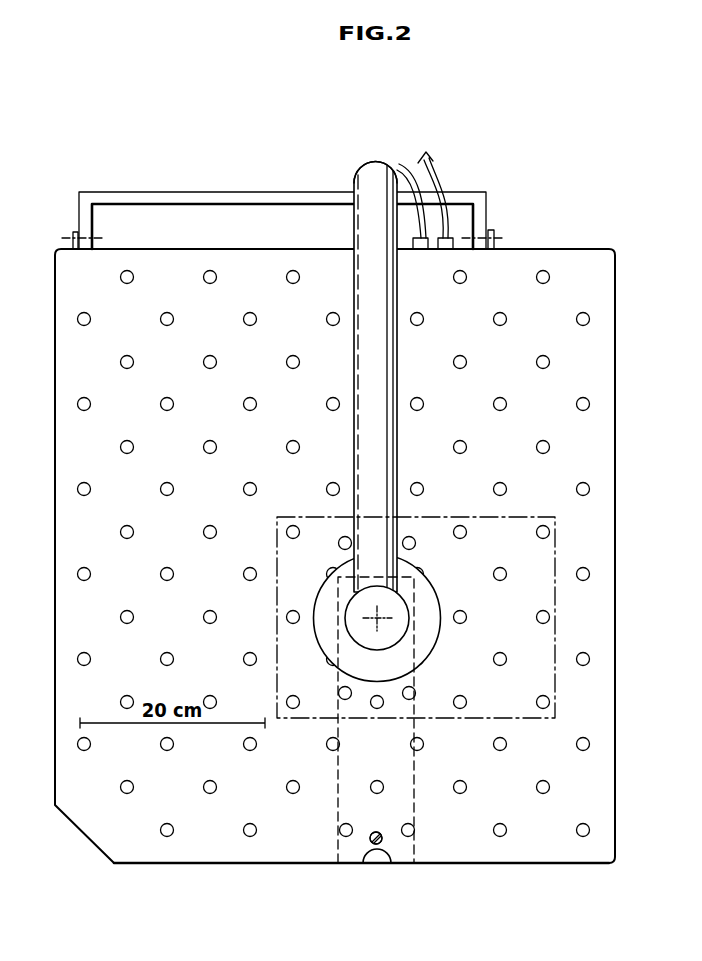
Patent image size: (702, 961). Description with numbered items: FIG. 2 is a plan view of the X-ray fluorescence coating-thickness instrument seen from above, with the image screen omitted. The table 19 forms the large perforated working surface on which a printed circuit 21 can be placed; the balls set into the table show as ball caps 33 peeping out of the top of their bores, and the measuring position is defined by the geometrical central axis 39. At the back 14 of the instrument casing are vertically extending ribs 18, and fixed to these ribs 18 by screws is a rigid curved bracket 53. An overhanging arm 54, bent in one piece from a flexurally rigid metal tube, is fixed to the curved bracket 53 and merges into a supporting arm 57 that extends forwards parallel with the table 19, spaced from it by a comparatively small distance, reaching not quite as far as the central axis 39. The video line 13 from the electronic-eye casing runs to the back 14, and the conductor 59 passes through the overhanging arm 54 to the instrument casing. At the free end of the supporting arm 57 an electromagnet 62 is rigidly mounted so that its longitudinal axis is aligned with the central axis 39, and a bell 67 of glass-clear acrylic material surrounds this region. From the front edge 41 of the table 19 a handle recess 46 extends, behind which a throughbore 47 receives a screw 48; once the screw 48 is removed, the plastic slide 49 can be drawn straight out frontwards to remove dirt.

The video line 13 is at (440, 182).
The back 14 is at (281, 249).
The ribs 18 is at (494, 233).
The table 19 is at (603, 300).
The printed circuit 21 is at (556, 637).
The ball cap 33 is at (167, 482).
The geometrical central axis 39 is at (373, 624).
The front edge 41 is at (507, 866).
The handle recess 46 is at (376, 866).
The throughbore 47 is at (380, 837).
The screw 48 is at (373, 836).
The slide 49 is at (343, 774).
The curved bracket 53 is at (205, 193).
The overhanging arm 54 is at (369, 172).
The supporting arm 57 is at (376, 352).
The conductor 59 is at (414, 190).
The electromagnet 62 is at (403, 642).
The bell 67 is at (432, 589).